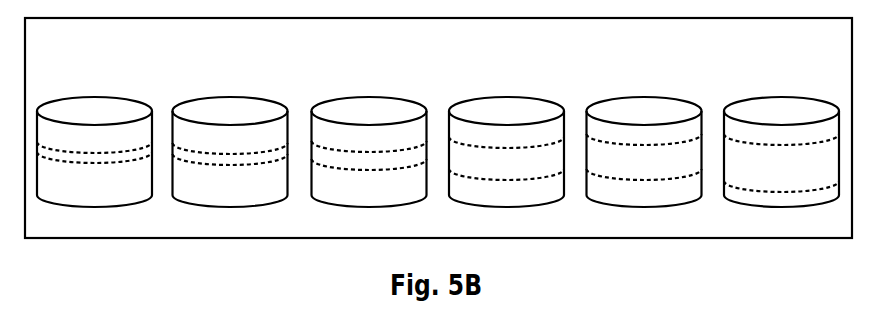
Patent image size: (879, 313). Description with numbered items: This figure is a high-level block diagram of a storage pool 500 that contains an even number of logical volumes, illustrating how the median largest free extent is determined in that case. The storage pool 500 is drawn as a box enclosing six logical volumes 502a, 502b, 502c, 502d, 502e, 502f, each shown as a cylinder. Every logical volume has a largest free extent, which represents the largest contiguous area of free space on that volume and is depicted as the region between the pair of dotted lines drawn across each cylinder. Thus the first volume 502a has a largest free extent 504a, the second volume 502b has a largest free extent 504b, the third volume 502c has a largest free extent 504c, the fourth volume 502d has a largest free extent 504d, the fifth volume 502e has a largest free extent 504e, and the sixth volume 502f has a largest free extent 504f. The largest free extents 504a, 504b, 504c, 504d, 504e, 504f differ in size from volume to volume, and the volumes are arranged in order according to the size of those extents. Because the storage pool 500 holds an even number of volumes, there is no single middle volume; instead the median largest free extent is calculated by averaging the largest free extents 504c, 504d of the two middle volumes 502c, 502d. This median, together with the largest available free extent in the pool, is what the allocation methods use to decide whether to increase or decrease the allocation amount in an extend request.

The storage pool 500 is at (834, 50).
The logical volume 502a is at (72, 120).
The logical volume 502b is at (208, 120).
The logical volume 502c is at (347, 120).
The logical volume 502d is at (484, 120).
The logical volume 502e is at (622, 120).
The logical volume 502f is at (804, 120).
The largest free extent 504a is at (92, 158).
The largest free extent 504b is at (230, 162).
The largest free extent 504c is at (368, 165).
The largest free extent 504d is at (505, 165).
The largest free extent 504e is at (643, 167).
The largest free extent 504f is at (782, 165).